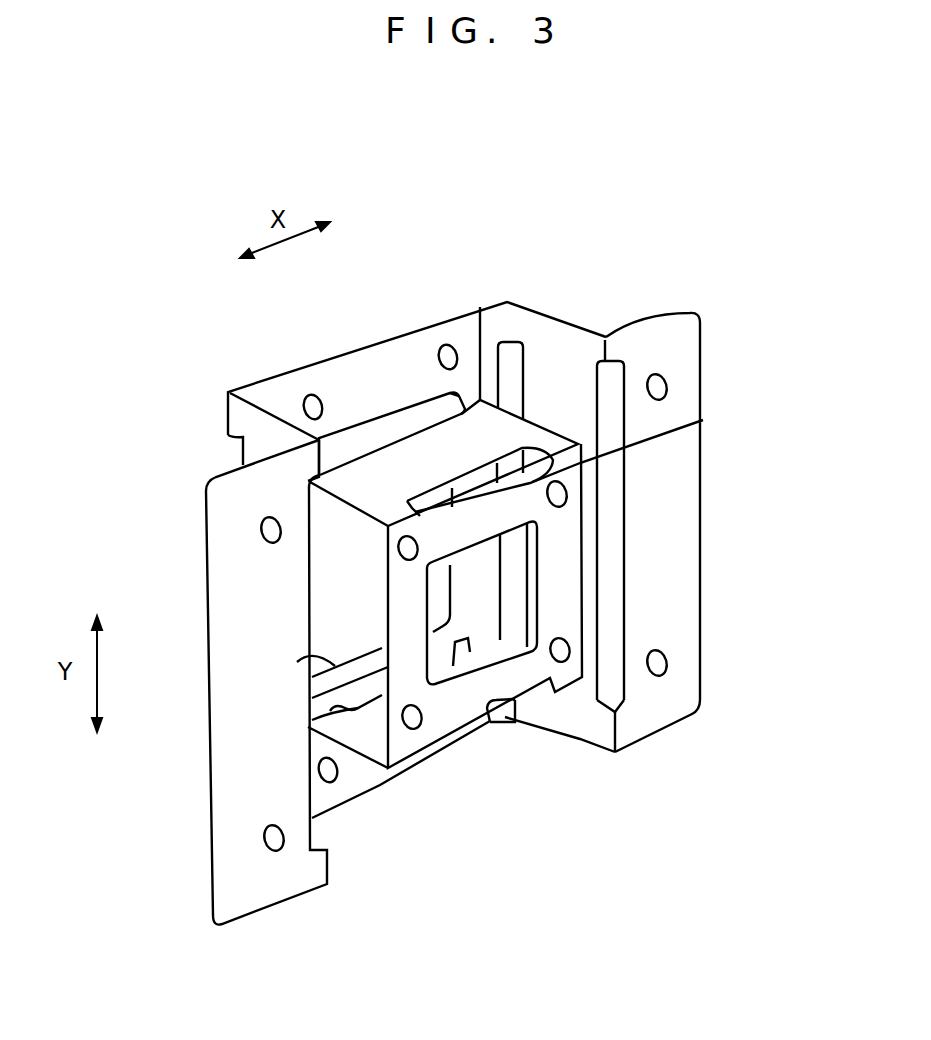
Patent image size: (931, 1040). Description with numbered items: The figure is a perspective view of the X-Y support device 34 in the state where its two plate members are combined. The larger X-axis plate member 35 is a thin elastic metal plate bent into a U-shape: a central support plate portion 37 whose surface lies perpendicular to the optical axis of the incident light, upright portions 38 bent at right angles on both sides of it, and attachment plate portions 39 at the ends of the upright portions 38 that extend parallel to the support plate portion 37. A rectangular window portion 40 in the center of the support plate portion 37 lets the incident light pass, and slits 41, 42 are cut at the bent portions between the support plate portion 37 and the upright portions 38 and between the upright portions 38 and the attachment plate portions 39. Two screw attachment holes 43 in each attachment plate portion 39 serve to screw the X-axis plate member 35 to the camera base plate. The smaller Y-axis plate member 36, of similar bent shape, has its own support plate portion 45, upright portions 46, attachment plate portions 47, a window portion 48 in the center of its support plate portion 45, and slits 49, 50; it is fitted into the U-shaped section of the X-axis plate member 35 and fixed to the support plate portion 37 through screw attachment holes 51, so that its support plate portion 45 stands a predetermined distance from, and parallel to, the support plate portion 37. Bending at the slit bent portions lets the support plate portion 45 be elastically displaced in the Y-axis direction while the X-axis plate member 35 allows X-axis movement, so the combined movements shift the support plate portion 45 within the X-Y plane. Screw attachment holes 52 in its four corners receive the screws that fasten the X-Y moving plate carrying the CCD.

The X-Y support device 34 is at (639, 253).
The X-axis plate member 35 is at (703, 384).
The Y-axis plate member 36 is at (539, 416).
The support plate portion 37 is at (252, 388).
The upright portions 38 is at (243, 445).
The attachment plate portions 39 is at (225, 637).
The rectangular window portion 40 is at (297, 662).
The slits 41 is at (240, 455).
The slits 42 is at (320, 836).
The screw attachment holes 43 is at (261, 530).
The support plate portion 45 is at (515, 724).
The upright portions 46 is at (367, 458).
The attachment plate portions 47 is at (387, 348).
The lower flange 48 is at (312, 698).
The slits 49 is at (703, 420).
The slits 50 is at (408, 410).
The screw attachment holes 51 is at (312, 395).
The screw attachment holes 52 is at (398, 549).